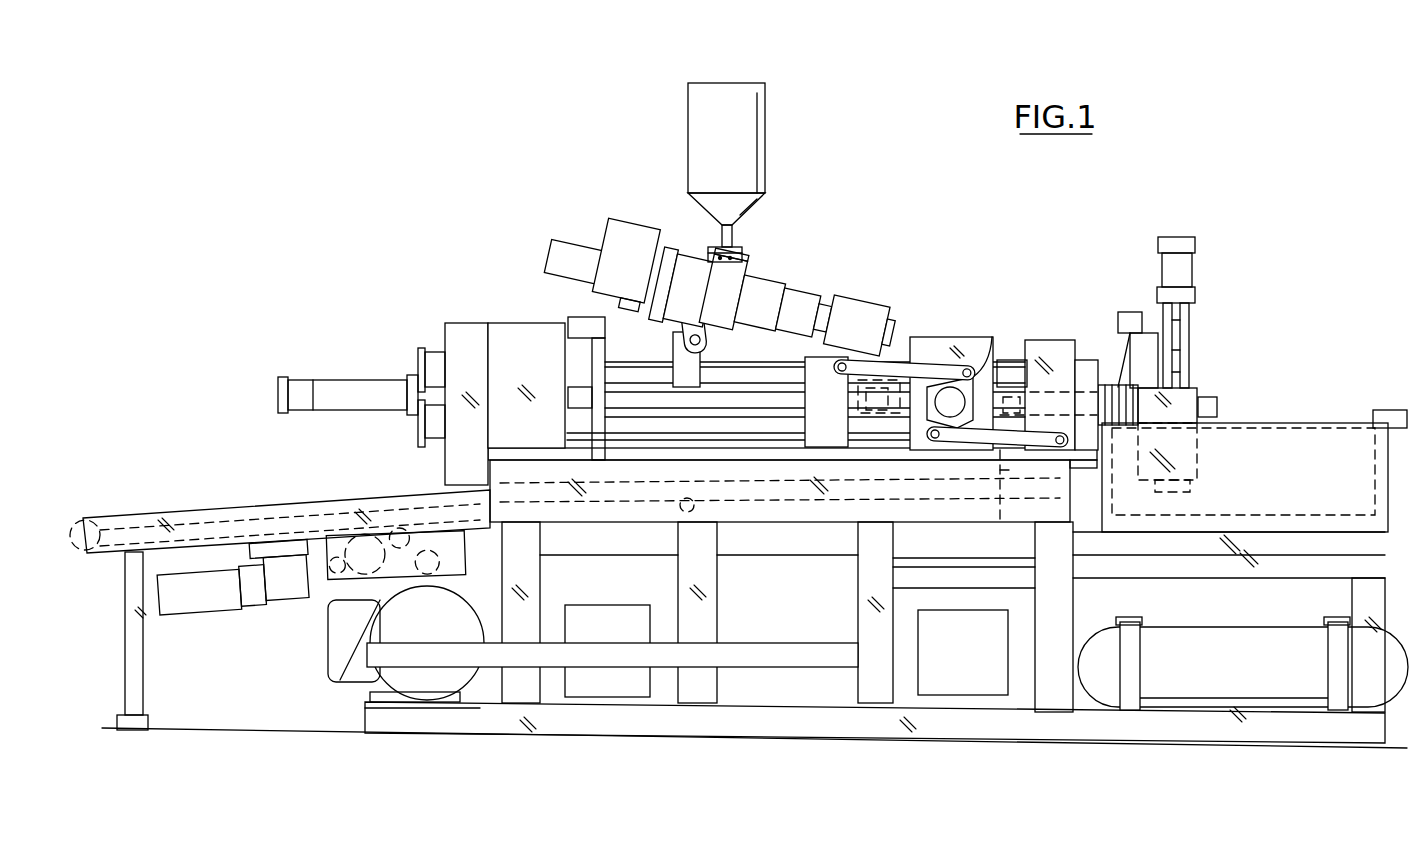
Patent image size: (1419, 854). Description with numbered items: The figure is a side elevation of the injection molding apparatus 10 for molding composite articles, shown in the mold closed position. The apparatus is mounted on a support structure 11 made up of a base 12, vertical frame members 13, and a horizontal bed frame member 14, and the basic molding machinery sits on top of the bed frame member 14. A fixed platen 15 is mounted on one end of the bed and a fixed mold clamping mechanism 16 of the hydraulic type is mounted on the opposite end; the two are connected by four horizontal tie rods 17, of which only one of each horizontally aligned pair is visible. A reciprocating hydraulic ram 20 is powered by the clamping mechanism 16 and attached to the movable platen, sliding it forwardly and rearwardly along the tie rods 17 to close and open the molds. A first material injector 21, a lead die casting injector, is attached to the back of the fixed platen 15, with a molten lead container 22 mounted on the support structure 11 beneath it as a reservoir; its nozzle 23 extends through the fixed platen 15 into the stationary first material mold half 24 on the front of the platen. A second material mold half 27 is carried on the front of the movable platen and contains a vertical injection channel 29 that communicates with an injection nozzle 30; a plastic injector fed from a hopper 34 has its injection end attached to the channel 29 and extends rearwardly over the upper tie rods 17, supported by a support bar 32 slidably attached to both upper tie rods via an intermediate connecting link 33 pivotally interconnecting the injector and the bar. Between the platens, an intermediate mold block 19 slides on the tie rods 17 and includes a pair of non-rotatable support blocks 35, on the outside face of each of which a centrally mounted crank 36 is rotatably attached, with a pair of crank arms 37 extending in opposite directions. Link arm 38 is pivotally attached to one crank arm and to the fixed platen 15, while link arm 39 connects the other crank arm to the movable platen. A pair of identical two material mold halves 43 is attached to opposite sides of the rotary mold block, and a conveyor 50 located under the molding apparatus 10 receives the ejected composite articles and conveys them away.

The injection molding apparatus 10 is at (1030, 293).
The support structure 11 is at (1383, 602).
The base 12 is at (1117, 733).
The vertical frame members 13 is at (712, 624).
The horizontal bed frame member 14 is at (777, 513).
The fixed platen 15 is at (1055, 340).
The fixed mold clamping mechanism 16 is at (508, 323).
The horizontal tie rods 17 is at (622, 420).
The intermediate mold block 19 is at (942, 333).
The reciprocating hydraulic ram 20 is at (750, 395).
The first material injector 21 is at (1190, 393).
The molten lead container 22 is at (1315, 428).
The nozzle 23 is at (1055, 390).
The first material mold half 24 is at (1012, 358).
The second material mold half 27 is at (853, 412).
The vertical injection channel 29 is at (852, 382).
The injection nozzle 30 is at (878, 413).
The support bar 32 is at (697, 366).
The intermediate connecting link 33 is at (697, 326).
The hopper 34 is at (758, 114).
The support blocks 35 is at (950, 350).
The crank 36 is at (932, 385).
The crank arms 37 is at (980, 347).
The link arm 38 is at (1037, 440).
The link arm 39 is at (873, 378).
The two material mold halves 43 is at (905, 408).
The conveyor 50 is at (293, 503).